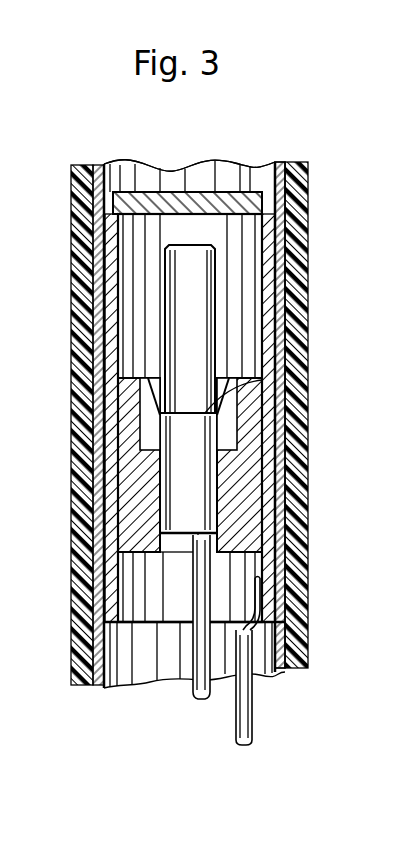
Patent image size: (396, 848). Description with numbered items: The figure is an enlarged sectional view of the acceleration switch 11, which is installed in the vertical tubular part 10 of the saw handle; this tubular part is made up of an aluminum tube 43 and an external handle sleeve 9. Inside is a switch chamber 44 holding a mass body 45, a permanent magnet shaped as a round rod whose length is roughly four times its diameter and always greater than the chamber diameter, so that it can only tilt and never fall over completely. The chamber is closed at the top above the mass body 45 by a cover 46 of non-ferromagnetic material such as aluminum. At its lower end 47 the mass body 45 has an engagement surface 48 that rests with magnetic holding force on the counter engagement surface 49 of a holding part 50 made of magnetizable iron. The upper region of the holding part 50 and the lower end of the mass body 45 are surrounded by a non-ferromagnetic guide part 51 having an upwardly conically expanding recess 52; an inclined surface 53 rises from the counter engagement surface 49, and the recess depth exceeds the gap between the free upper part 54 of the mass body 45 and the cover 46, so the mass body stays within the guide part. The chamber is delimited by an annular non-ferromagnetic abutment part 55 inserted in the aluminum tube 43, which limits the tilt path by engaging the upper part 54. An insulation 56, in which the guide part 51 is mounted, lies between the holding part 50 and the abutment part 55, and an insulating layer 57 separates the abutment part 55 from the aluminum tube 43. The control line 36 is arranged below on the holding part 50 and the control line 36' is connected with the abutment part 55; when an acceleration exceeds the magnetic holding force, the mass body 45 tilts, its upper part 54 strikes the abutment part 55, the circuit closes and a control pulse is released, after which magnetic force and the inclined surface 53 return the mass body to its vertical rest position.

The external handle sleeve 9 is at (77, 207).
The vertical tubular part 10 is at (283, 177).
The acceleration switch 11 is at (325, 165).
The control line 36 is at (176, 617).
The control line 36' is at (269, 661).
The aluminum tube 43 is at (98, 252).
The switch chamber 44 is at (243, 318).
The mass body 45 is at (172, 357).
The cover 46 is at (228, 195).
The lower end 47 is at (177, 412).
The engagement surface 48 is at (235, 425).
The counter engagement surface 49 is at (263, 402).
The holding part 50 is at (175, 502).
The guide part 51 is at (138, 407).
The recess 52 is at (222, 378).
The inclined surface 53 is at (262, 380).
The upper part 54 is at (200, 255).
The abutment part 55 is at (112, 333).
The insulation 56 is at (128, 467).
The insulating layer 57 is at (102, 290).